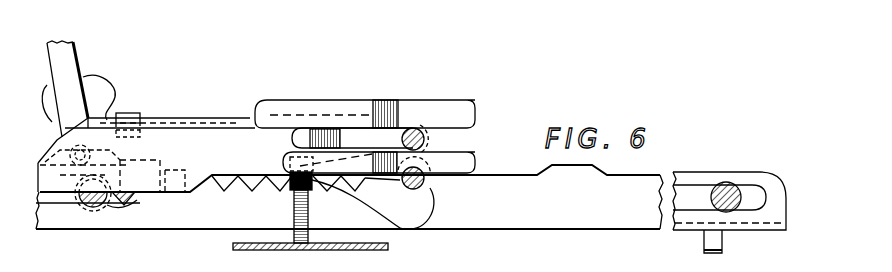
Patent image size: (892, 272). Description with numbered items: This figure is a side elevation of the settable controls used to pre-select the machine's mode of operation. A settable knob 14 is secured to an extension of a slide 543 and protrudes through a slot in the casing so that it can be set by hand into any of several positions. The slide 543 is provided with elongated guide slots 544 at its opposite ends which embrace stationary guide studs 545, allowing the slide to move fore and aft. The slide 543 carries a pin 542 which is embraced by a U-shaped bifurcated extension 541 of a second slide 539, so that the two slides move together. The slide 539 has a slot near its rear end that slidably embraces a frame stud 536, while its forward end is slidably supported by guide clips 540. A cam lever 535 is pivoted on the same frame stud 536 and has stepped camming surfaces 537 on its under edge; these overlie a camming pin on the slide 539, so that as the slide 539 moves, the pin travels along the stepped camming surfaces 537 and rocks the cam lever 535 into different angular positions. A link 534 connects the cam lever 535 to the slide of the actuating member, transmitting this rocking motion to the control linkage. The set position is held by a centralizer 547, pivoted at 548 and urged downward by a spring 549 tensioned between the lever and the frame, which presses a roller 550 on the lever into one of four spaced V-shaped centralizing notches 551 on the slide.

The settable knob 14 is at (98, 85).
The link 534 is at (110, 31).
The cam lever 535 is at (176, 118).
The frame stud 536 is at (415, 126).
The stepped camming surfaces 537 is at (150, 160).
The slide 539 is at (299, 110).
The guide clips 540 is at (130, 113).
The U-shaped bifurcated extension 541 is at (135, 205).
The pin 542 is at (174, 165).
The slide 543 is at (477, 228).
The elongated guide slots 544 is at (56, 206).
The stationary guide studs 545 is at (100, 208).
The centralizer 547 is at (402, 214).
The pivot 548 is at (428, 188).
The spring 549 is at (293, 213).
The roller 550 is at (285, 160).
The V-shaped centralizing notches 551 is at (218, 175).